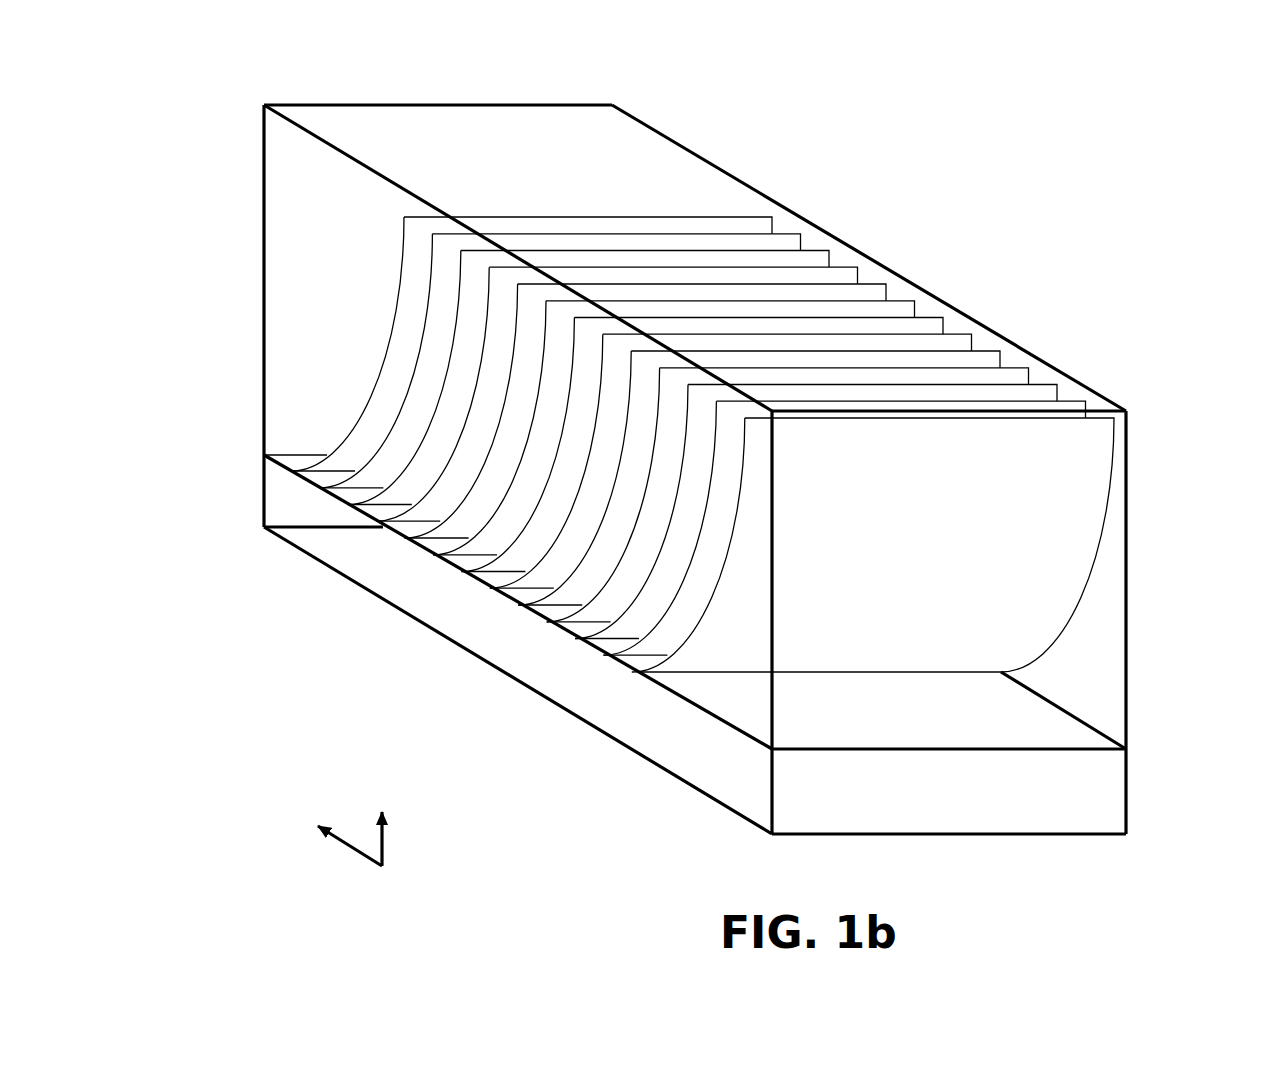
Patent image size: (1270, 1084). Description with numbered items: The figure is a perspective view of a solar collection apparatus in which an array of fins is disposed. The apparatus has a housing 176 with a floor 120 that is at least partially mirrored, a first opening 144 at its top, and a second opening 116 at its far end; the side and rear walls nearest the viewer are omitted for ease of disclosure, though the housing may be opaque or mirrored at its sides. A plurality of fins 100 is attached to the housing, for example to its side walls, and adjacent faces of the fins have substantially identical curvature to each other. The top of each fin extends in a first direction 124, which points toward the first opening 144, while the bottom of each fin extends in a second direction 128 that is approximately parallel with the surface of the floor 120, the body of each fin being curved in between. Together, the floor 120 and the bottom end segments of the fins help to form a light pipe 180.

The fins 100 is at (396, 247).
The second opening 116 is at (288, 485).
The floor 120 is at (320, 570).
The first direction 124 is at (396, 838).
The second direction 128 is at (323, 811).
The first opening 144 is at (1138, 398).
The housing 176 is at (363, 101).
The light pipe 180 is at (1140, 762).